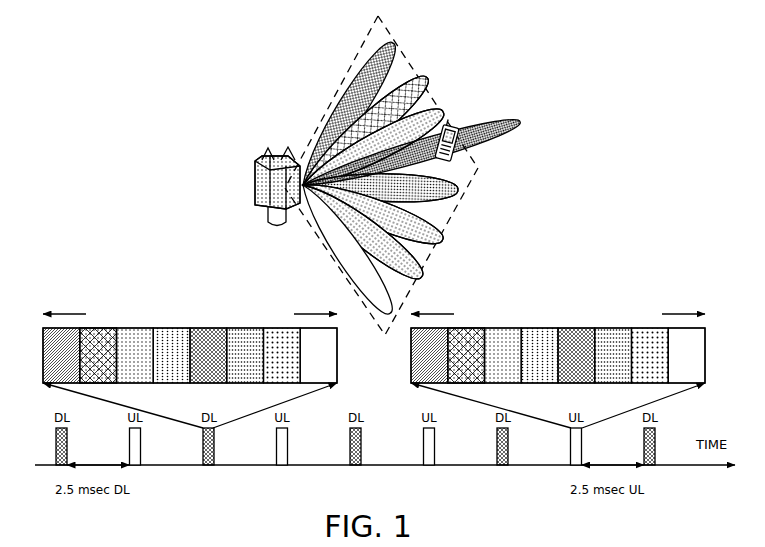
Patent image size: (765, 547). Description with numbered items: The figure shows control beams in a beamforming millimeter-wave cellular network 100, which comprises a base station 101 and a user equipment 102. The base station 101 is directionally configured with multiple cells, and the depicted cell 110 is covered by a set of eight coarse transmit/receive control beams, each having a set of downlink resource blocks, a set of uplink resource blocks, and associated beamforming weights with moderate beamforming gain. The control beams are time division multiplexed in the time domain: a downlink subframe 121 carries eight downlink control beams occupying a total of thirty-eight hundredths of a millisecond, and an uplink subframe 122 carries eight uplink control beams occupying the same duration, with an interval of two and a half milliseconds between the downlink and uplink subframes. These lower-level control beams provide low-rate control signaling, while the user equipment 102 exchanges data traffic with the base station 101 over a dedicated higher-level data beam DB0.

The beamforming mmWave cellular network 100 is at (107, 46).
The base station 101 is at (266, 156).
The user equipment 102 is at (455, 127).
The cell 110 is at (485, 167).
The downlink subframe 121 is at (337, 352).
The uplink subframe 122 is at (705, 352).
The dedicated data beam DB0 is at (498, 128).